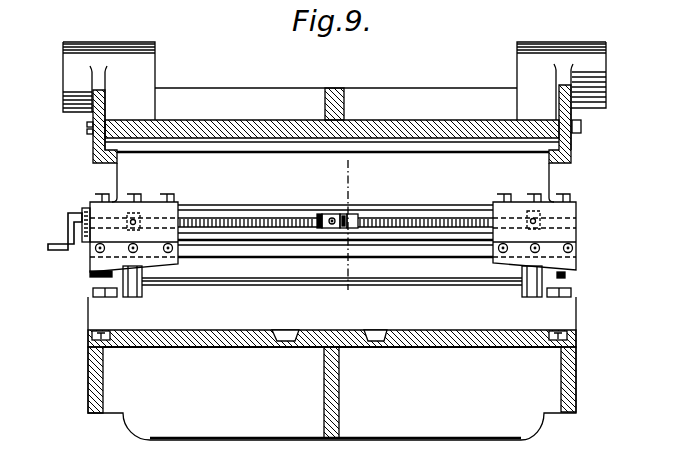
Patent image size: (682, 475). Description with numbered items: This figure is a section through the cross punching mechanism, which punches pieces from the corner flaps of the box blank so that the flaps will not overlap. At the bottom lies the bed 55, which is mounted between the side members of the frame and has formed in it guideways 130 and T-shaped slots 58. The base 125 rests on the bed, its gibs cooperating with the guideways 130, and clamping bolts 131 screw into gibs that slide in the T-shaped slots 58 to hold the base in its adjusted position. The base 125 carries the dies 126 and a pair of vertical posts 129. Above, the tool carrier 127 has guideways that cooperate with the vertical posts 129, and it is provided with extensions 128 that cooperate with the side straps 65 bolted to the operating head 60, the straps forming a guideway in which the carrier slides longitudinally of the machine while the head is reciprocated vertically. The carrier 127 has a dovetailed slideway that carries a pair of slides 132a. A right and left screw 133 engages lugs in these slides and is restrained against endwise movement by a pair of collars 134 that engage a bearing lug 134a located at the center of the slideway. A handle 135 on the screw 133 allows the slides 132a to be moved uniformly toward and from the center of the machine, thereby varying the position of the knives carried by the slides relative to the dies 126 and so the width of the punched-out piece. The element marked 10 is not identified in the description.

The operating head 60 is at (409, 82).
The base plate 10 is at (345, 288).
The side straps 65 is at (93, 148).
The extensions 128 is at (584, 137).
The slides 132a is at (97, 208).
The handle 135 is at (55, 241).
The right and left screw 133 is at (274, 203).
The bearing lug 134a is at (332, 214).
The collars 134 is at (345, 217).
The tool carrier 127 is at (335, 207).
The dies 126 is at (335, 271).
The bases 125 is at (332, 296).
The vertical posts 129 is at (92, 277).
The clamping bolts 131 is at (91, 292).
The bed 55 is at (446, 430).
The guideways 130 is at (292, 342).
The T-shaped slots 58 is at (95, 341).